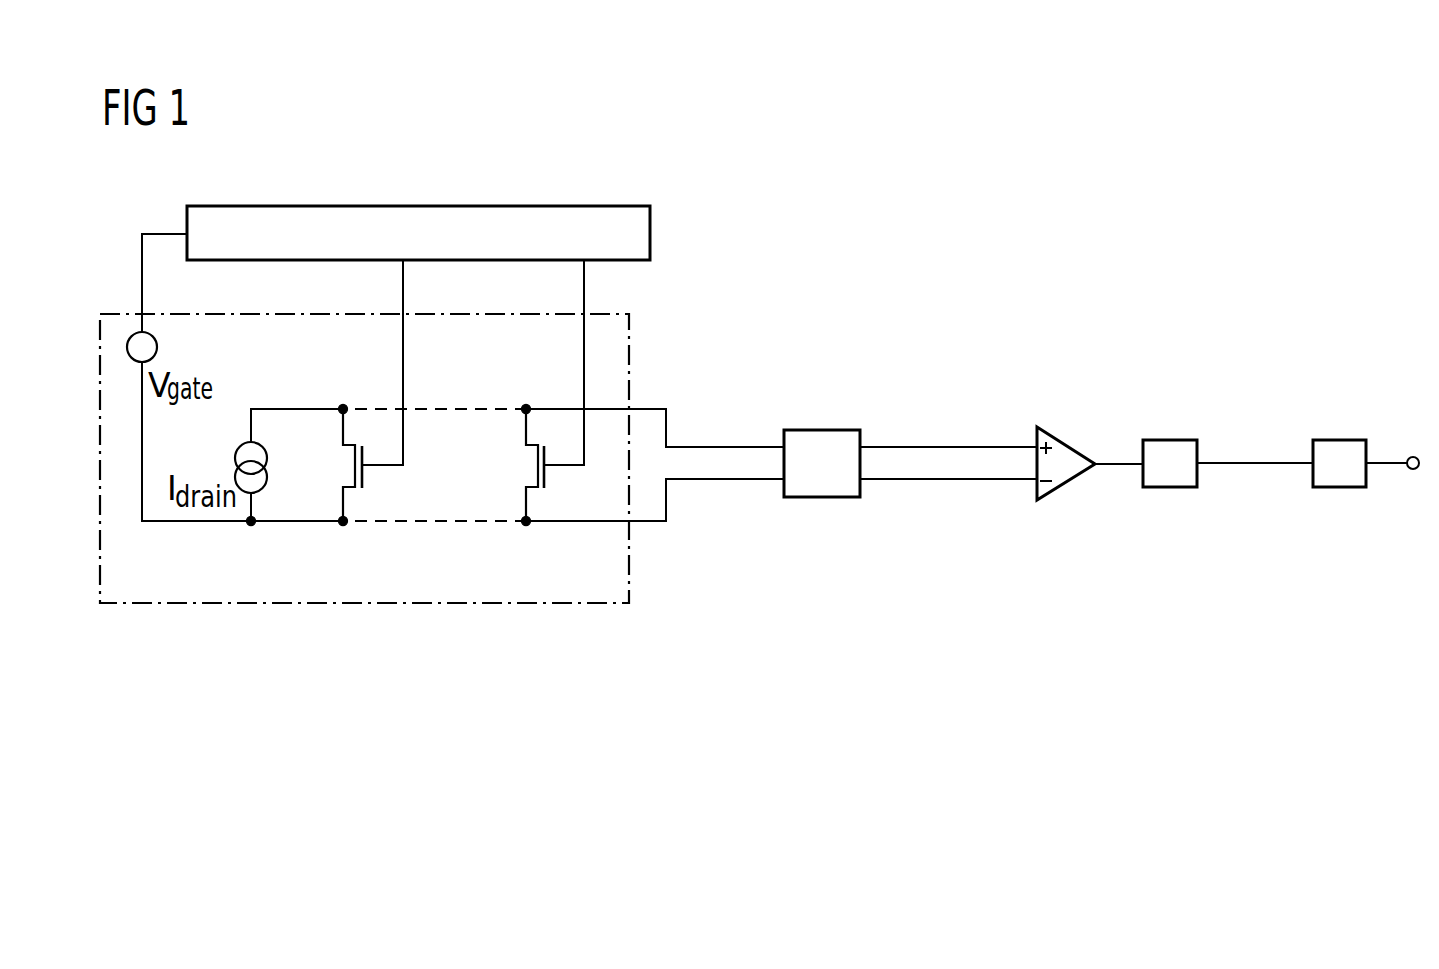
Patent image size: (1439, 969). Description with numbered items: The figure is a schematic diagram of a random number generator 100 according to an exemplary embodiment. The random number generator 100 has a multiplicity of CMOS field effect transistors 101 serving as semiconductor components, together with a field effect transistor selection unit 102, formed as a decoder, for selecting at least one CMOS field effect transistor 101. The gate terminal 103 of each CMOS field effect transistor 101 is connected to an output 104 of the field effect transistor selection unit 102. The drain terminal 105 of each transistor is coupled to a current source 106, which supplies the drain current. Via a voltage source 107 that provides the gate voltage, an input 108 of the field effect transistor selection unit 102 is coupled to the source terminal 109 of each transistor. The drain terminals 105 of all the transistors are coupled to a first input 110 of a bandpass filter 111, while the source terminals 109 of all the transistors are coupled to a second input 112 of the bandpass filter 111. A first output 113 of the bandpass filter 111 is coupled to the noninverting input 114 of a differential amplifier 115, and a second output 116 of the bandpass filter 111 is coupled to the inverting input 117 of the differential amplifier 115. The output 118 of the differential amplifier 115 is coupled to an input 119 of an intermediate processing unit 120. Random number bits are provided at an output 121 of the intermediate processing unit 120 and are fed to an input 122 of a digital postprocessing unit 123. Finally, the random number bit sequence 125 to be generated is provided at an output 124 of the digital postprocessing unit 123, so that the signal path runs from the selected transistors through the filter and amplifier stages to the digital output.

The random number generator 100 is at (1133, 270).
The CMOS field effect transistor 101 is at (353, 462).
The field effect transistor selection unit 102 is at (375, 206).
The gate terminal 103 is at (366, 468).
The output of the field effect transistor selection unit 104 is at (407, 262).
The drain terminal 105 is at (343, 404).
The current source 106 is at (235, 453).
The voltage source 107 is at (157, 347).
The input of the field effect transistor selection unit 108 is at (187, 230).
The source terminal 109 is at (343, 526).
The first input of the bandpass filter 110 is at (784, 442).
The bandpass filter 111 is at (820, 430).
The second input of the bandpass filter 112 is at (784, 484).
The first output of the bandpass filter 113 is at (860, 442).
The noninverting input 114 is at (1037, 440).
The differential amplifier 115 is at (1047, 500).
The second output of the bandpass filter 116 is at (860, 484).
The inverting input 117 is at (1037, 486).
The output of the differential amplifier 118 is at (1095, 466).
The input of the intermediate processing unit 119 is at (1143, 460).
The intermediate processing unit 120 is at (1170, 487).
The output of the intermediate processing unit 121 is at (1200, 460).
The input of the digital postprocessing unit 122 is at (1313, 460).
The digital postprocessing unit 123 is at (1340, 487).
The output of the digital postprocessing unit 124 is at (1368, 460).
The random number bit sequence 125 is at (1413, 470).